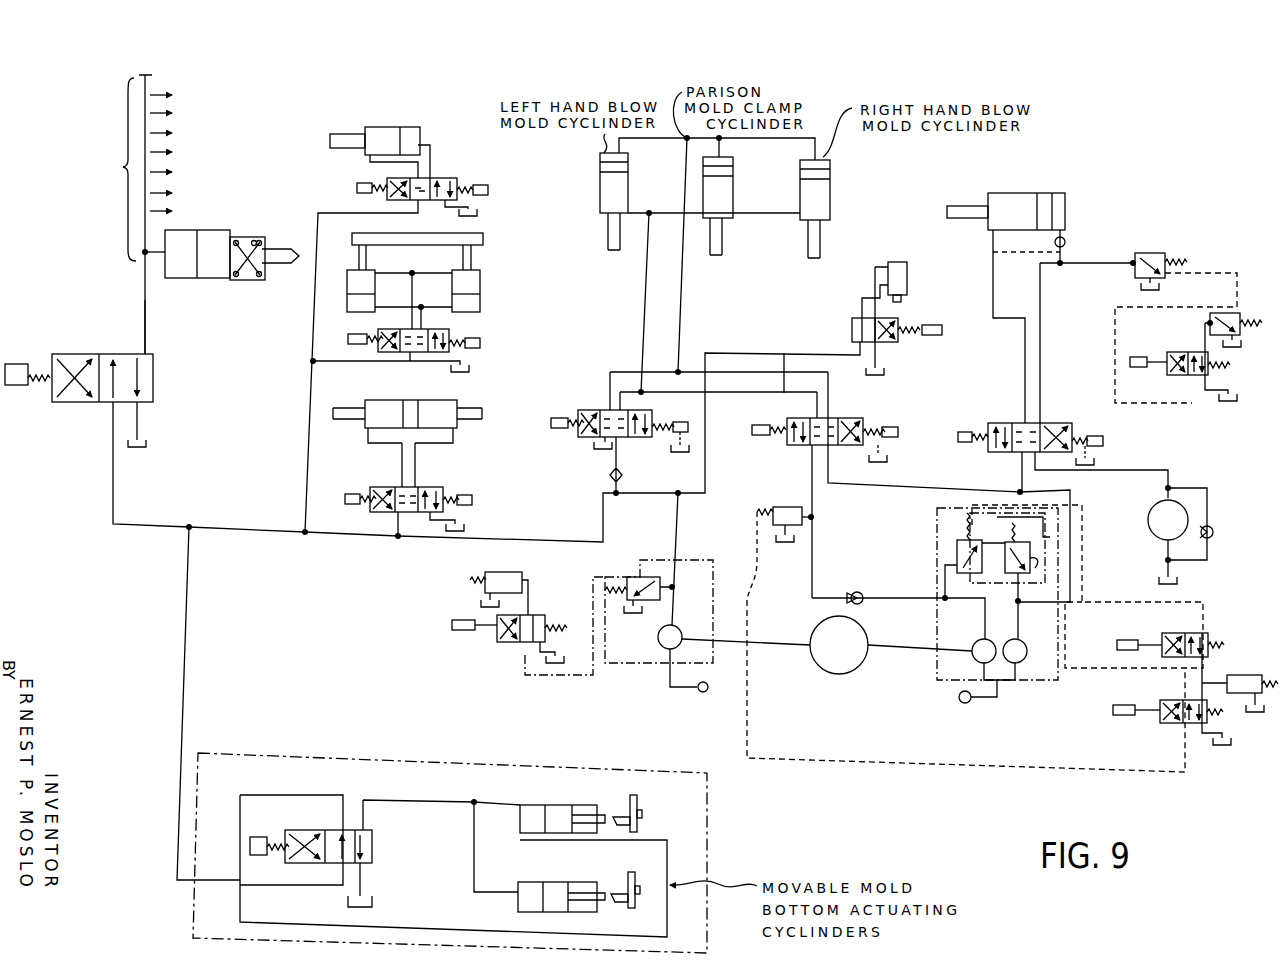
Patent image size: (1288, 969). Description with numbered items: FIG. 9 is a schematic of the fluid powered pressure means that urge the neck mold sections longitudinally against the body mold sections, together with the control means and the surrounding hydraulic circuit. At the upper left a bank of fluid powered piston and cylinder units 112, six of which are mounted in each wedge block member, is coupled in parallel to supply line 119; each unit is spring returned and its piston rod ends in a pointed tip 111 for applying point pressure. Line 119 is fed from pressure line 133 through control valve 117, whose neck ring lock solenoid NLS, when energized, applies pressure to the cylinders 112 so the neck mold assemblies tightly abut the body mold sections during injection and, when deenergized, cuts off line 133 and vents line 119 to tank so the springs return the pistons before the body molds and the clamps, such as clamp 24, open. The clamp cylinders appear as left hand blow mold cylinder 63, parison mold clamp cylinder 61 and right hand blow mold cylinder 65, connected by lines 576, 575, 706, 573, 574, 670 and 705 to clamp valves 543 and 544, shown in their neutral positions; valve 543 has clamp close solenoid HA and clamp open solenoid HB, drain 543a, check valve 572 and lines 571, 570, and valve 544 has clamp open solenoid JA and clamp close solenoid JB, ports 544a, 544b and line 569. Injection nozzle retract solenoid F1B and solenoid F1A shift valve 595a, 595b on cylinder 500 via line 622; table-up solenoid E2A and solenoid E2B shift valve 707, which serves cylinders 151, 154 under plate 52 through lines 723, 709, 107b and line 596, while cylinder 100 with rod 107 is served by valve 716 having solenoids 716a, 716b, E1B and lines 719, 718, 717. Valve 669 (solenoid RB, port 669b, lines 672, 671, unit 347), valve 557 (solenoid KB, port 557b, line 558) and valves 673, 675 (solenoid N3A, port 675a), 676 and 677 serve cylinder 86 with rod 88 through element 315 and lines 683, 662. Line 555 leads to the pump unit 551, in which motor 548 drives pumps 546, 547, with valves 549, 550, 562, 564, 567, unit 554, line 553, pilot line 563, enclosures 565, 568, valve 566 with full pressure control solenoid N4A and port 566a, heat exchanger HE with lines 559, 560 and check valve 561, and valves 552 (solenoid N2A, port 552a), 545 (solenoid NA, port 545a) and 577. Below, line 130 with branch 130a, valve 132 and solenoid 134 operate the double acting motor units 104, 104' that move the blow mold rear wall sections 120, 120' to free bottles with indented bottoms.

The clamp 24 is at (86, 214).
The pressure-applying means 112 is at (186, 143).
The pointed piston rod end 111 is at (286, 258).
The supply line 119 is at (147, 328).
The neck ring lock solenoid NLS is at (25, 363).
The control valve 117 is at (96, 406).
The pressure line 133 is at (208, 529).
The fluid line 596 is at (317, 333).
The cylinder 500 is at (378, 107).
The fluid line 622 is at (431, 154).
The valve 595a is at (392, 191).
The valve 595b is at (463, 200).
The solenoid F1A is at (360, 182).
The injection nozzle retract solenoid F1B is at (508, 180).
The plate 52 is at (483, 241).
The cylinder 151 is at (347, 300).
The cylinder 154 is at (480, 302).
The fluid line 723 is at (396, 286).
The fluid line 709 is at (450, 326).
The valve 707 is at (406, 361).
The table-up solenoid E2A is at (313, 361).
The solenoid E2B is at (480, 343).
The cylinder rod 107 is at (418, 381).
The fluid line 107b is at (458, 359).
The cylinder 100 is at (455, 401).
The fluid line 719 is at (368, 431).
The fluid line 718 is at (400, 461).
The valve 716 is at (408, 488).
The solenoid 716a is at (378, 491).
The solenoid 716b is at (431, 489).
The fluid line 717 is at (400, 519).
The solenoid E1B is at (460, 514).
The left hand blow mold cylinder 63 is at (600, 185).
The parison mold clamp cylinder 61 is at (733, 195).
The right hand blow mold cylinder 65 is at (830, 190).
The fluid line 576 is at (775, 153).
The fluid line 575 is at (683, 290).
The fluid line 706 is at (645, 308).
The fluid line 573 is at (610, 390).
The clamp valve 543 is at (618, 410).
The clamp close solenoid HA is at (552, 423).
The clamp open solenoid HB is at (690, 414).
The tank return 543a is at (600, 449).
The check valve 572 is at (610, 473).
The fluid line 571 is at (668, 494).
The fluid line 570 is at (678, 541).
The fluid line 670 is at (706, 459).
The fluid line 574 is at (712, 346).
The fluid line 705 is at (790, 359).
The clamp valve 544 is at (801, 418).
The clamp open solenoid JA is at (752, 430).
The fluid line 544a is at (809, 446).
The valve spring 544b is at (900, 440).
The clamp close solenoid JB is at (891, 444).
The fluid line 569 is at (830, 396).
The fluid line 555 is at (866, 492).
The accumulator 347 is at (907, 281).
The fluid line 672 is at (875, 283).
The fluid line 671 is at (862, 309).
The valve 669 is at (890, 317).
The solenoid RB is at (942, 331).
The valve 669b is at (880, 345).
The cylinder 86 is at (998, 193).
The piston rod 88 is at (952, 206).
The check valve 315 is at (1066, 244).
The fluid line 683 is at (1025, 381).
The fluid line 662 is at (1098, 266).
The relief valve 673 is at (1148, 253).
The control unit 677 is at (1200, 297).
The relief valve 676 is at (1258, 306).
The valve 675 is at (1185, 352).
The solenoid N3A is at (1130, 359).
The valve 675a is at (1175, 375).
The valve 557 is at (1040, 423).
The valve spring 557b is at (1072, 429).
The solenoid KB is at (1103, 444).
The fluid line 558 is at (1161, 471).
The heat exchanger HE is at (1168, 542).
The fluid line 559 is at (1186, 504).
The fluid line 560 is at (1208, 513).
The check valve 561 is at (1213, 539).
The relief valve 562 is at (789, 509).
The pilot line 563 is at (752, 602).
The fluid line 553 is at (813, 550).
The pump control unit 554 is at (1070, 541).
The pump unit 551 is at (1082, 573).
The relief valve 550 is at (957, 561).
The relief valve 549 is at (1012, 576).
The relief valve 564 is at (640, 577).
The control unit 565 is at (585, 618).
The relief valve 567 is at (528, 592).
The control unit 568 is at (500, 572).
The valve 566 is at (520, 650).
The full pressure control solenoid N4A is at (463, 621).
The valve 566a is at (500, 642).
The pump 547 is at (734, 659).
The motor 548 is at (815, 675).
The pumps 546 is at (935, 678).
The valve 552 is at (1198, 634).
The solenoid N2A is at (1117, 645).
The valve 552a is at (1175, 634).
The relief valve 577 is at (1240, 675).
The valve 545 is at (1186, 700).
The solenoid NA is at (1113, 710).
The valve 545a is at (1170, 724).
The fluid line 130a is at (400, 923).
The fluid line 130 is at (415, 791).
The valve 132 is at (310, 830).
The solenoid 134 is at (258, 837).
The fluid pressure double acting motor unit 104 is at (562, 804).
The fluid pressure double acting motor unit 104' is at (533, 902).
The movable rear wall section 120 is at (646, 803).
The mold bottom 120' is at (629, 877).